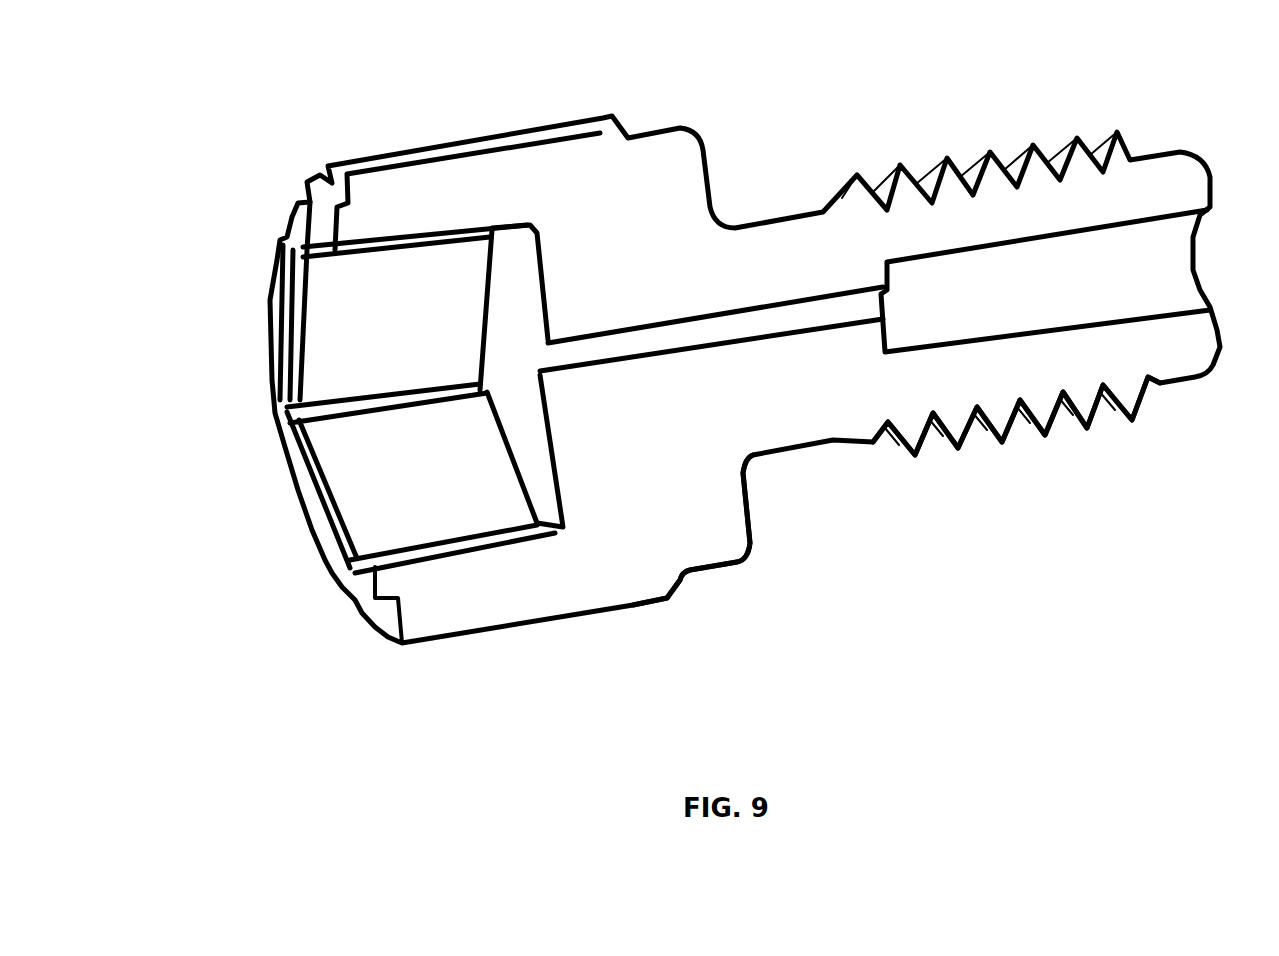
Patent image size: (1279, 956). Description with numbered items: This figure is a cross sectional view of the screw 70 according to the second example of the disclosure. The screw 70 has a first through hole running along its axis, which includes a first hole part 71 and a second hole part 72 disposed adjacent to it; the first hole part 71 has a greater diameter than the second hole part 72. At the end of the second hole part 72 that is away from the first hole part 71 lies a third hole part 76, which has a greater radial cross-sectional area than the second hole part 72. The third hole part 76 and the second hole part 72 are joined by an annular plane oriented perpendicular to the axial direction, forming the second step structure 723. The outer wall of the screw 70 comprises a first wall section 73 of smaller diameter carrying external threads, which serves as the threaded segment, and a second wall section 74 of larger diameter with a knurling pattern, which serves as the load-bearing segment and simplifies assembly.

The screw 70 is at (1210, 582).
The first hole part 71 is at (1145, 267).
The second hole part 72 is at (783, 325).
The first wall section 73 is at (833, 440).
The second wall section 74 is at (633, 605).
The third hole part 76 is at (383, 323).
The second step structure 723 is at (513, 263).